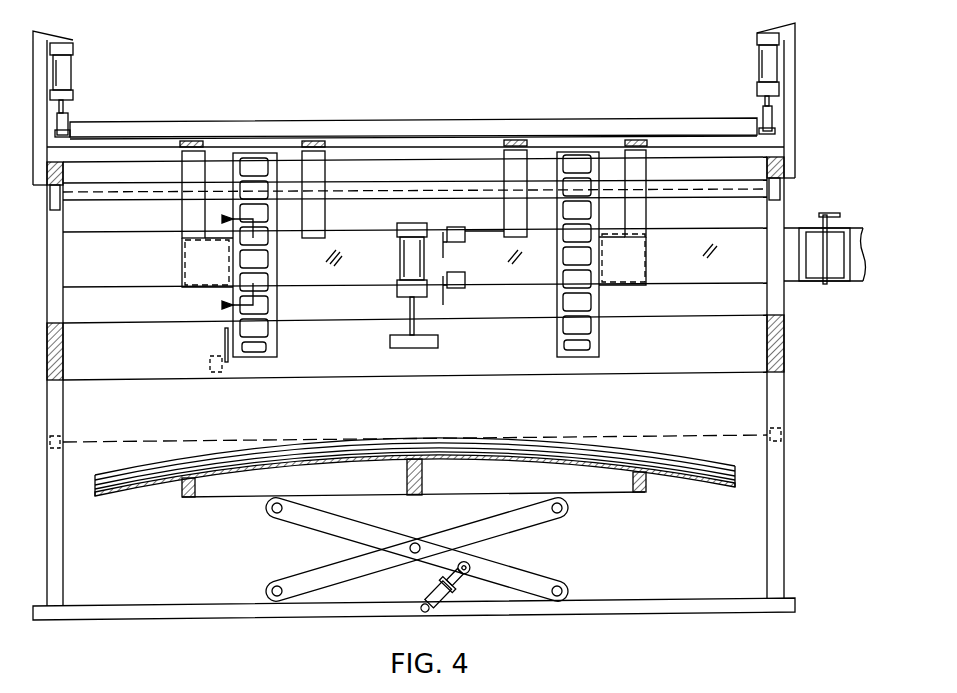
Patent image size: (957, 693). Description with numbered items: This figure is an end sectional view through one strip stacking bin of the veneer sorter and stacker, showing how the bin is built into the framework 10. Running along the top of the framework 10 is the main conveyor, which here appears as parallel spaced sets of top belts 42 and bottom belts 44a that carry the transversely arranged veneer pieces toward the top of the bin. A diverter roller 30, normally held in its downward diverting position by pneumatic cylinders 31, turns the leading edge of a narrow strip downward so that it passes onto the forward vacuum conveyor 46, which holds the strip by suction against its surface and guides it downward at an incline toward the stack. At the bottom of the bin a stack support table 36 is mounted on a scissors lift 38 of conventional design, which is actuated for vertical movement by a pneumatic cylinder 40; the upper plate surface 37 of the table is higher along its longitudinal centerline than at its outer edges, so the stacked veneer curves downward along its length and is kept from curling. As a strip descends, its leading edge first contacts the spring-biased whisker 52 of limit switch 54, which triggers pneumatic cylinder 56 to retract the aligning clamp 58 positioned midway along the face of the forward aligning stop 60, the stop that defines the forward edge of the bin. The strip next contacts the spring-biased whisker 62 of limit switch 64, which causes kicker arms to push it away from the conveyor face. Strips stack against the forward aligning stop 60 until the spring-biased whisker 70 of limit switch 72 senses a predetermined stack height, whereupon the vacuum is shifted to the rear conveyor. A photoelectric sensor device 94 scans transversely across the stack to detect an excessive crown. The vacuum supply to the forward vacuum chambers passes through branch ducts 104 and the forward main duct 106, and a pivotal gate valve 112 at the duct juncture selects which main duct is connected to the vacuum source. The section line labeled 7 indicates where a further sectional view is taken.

The framework 10 is at (405, 321).
The diverter roller 30 is at (191, 123).
The pneumatic cylinders 31 is at (757, 70).
The stack support table 36 is at (228, 498).
The upper plate surface 37 is at (176, 483).
The scissors lift 38 is at (522, 562).
The pneumatic cylinder 40 is at (432, 587).
The top belts 42 is at (320, 140).
The bottom belts 44a is at (217, 149).
The forward vacuum conveyor 46 is at (280, 303).
The spring-biased whisker 52 is at (445, 257).
The limit switch 54 is at (455, 227).
The pneumatic cylinder 56 is at (401, 260).
The aligning clamp 58 is at (408, 348).
The forward aligning stop 60 is at (708, 325).
The spring-biased whisker 62 is at (447, 306).
The limit switch 64 is at (463, 278).
The spring-biased whisker 70 is at (226, 340).
The limit switch 72 is at (204, 364).
The section line 7- 7 is at (230, 262).
The photoelectric sensor device 94 is at (50, 447).
The branch ducts 104 is at (226, 273).
The forward main duct 106 is at (712, 224).
The pivotal gate valve 112 is at (828, 264).